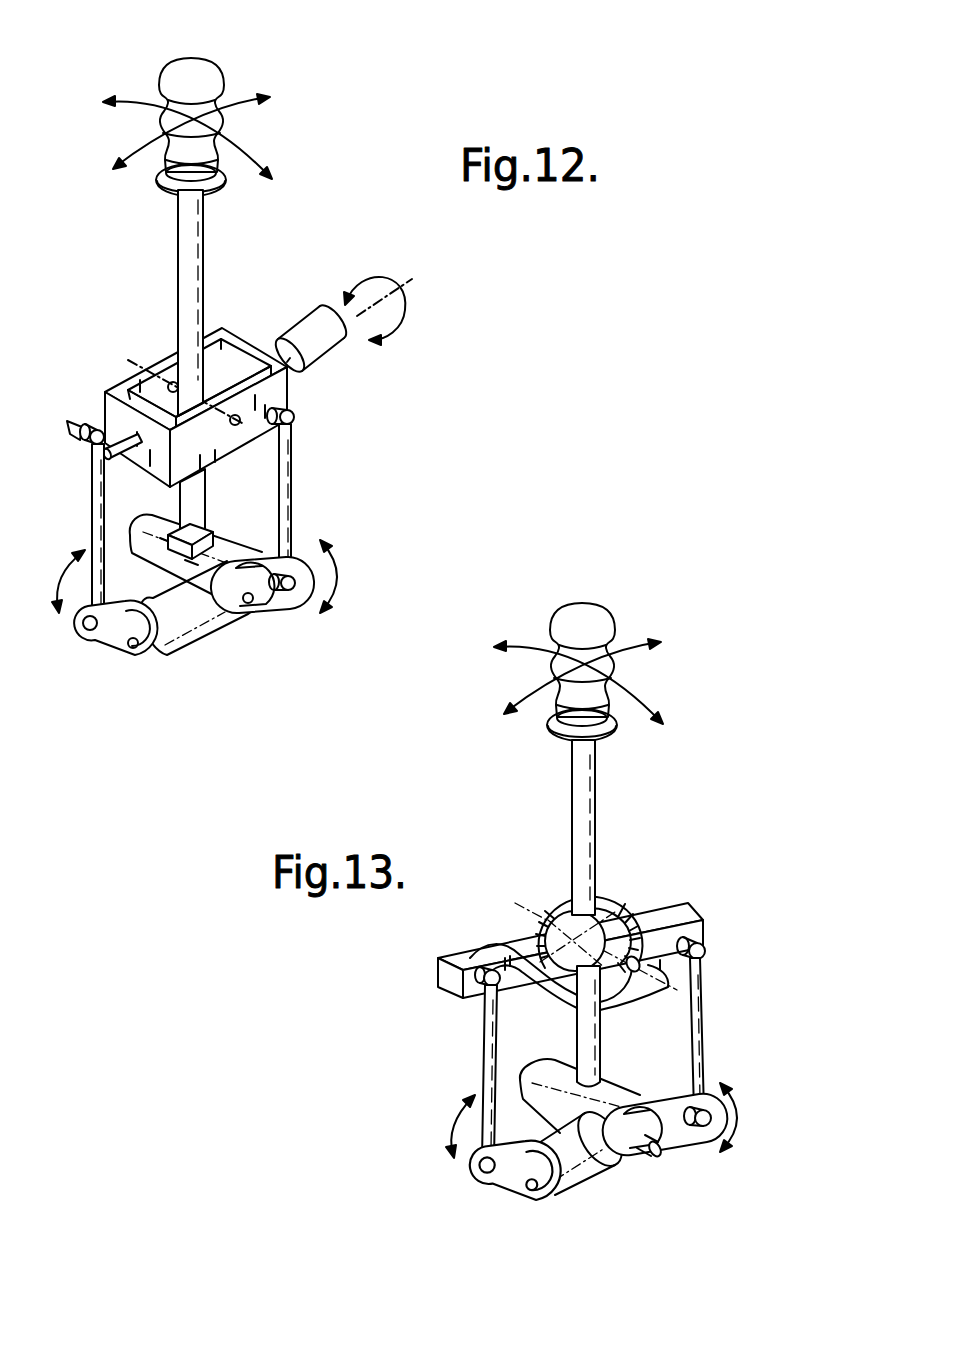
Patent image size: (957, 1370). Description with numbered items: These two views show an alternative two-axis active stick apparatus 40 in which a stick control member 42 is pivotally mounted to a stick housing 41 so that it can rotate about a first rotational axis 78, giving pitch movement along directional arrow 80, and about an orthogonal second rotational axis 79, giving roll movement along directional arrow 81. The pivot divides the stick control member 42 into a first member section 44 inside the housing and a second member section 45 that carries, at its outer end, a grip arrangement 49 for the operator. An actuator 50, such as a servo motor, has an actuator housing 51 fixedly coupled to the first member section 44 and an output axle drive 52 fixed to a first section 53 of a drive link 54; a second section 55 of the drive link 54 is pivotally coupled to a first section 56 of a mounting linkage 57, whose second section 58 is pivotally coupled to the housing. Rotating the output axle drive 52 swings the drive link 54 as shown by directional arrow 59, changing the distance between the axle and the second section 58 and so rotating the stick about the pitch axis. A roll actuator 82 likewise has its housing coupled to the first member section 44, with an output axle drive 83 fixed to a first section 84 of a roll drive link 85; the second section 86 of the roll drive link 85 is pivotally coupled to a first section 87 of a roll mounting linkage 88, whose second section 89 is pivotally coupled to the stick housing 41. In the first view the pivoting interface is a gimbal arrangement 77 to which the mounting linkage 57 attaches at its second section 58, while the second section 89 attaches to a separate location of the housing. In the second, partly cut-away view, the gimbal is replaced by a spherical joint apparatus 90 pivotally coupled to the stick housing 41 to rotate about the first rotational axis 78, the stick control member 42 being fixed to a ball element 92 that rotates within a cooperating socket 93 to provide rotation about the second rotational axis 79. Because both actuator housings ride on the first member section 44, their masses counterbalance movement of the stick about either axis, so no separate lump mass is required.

In FIG. 12, the active stick apparatus 40 is at (343, 193).
In FIG. 13, the stick housing 41 is at (490, 941).
In FIG. 12, the stick control member 42 is at (178, 258).
In FIG. 13, the stick control member 42 is at (571, 803).
In FIG. 12, the first member section 44 is at (215, 480).
In FIG. 13, the first member section 44 is at (601, 1026).
In FIG. 12, the second member section 45 is at (201, 214).
In FIG. 13, the second member section 45 is at (594, 757).
In FIG. 12, the grip arrangement 49 is at (160, 68).
In FIG. 13, the grip arrangement 49 is at (586, 612).
In FIG. 12, the actuator 50 is at (230, 618).
In FIG. 13, the actuator 50 is at (612, 1166).
In FIG. 12, the actuator housing 51 is at (213, 558).
In FIG. 13, the actuator housing 51 is at (608, 1100).
In FIG. 12, the output axle drive 52 is at (253, 605).
In FIG. 13, the output axle drive 52 is at (661, 1152).
In FIG. 12, the first section of drive link 53 is at (250, 624).
In FIG. 13, the first section of drive link 53 is at (650, 1162).
In FIG. 12, the drive link 54 is at (258, 600).
In FIG. 13, the drive link 54 is at (680, 1134).
In FIG. 12, the second section of drive link 55 is at (323, 540).
In FIG. 13, the second section of drive link 55 is at (722, 1084).
In FIG. 12, the first section of mounting linkage 56 is at (323, 612).
In FIG. 13, the first section of mounting linkage 56 is at (722, 1152).
In FIG. 12, the mounting linkage 57 is at (293, 462).
In FIG. 13, the mounting linkage 57 is at (705, 1008).
In FIG. 12, the second section of mounting linkage 58 is at (296, 418).
In FIG. 13, the second section of mounting linkage 58 is at (706, 952).
In FIG. 12, the directional arrow 59 is at (340, 572).
In FIG. 13, the directional arrow 59 is at (745, 1112).
In FIG. 12, the gimbal arrangement 77 is at (284, 388).
In FIG. 12, the first rotational axis 78 is at (272, 437).
In FIG. 13, the first rotational axis 78 is at (656, 974).
In FIG. 12, the second rotational axis 79 is at (404, 283).
In FIG. 13, the second rotational axis 79 is at (650, 907).
In FIG. 12, the directional arrow 80 is at (236, 100).
In FIG. 13, the directional arrow 80 is at (641, 642).
In FIG. 12, the directional arrow 81 is at (238, 148).
In FIG. 13, the directional arrow 81 is at (646, 697).
In FIG. 12, the roll actuator 82 is at (183, 638).
In FIG. 13, the roll actuator 82 is at (577, 1182).
In FIG. 12, the output axle drive 83 is at (134, 649).
In FIG. 13, the output axle drive 83 is at (528, 1192).
In FIG. 12, the first section of roll drive link 84 is at (150, 661).
In FIG. 13, the first section of roll drive link 84 is at (541, 1190).
In FIG. 12, the roll drive link 85 is at (114, 640).
In FIG. 13, the roll drive link 85 is at (508, 1182).
In FIG. 12, the second section of roll drive link 86 is at (80, 598).
In FIG. 13, the second section of roll drive link 86 is at (480, 1146).
In FIG. 12, the pivot axis 87 is at (118, 603).
In FIG. 13, the pivot axis 87 is at (508, 1160).
In FIG. 12, the roll mounting linkage 88 is at (92, 477).
In FIG. 13, the roll mounting linkage 88 is at (487, 1022).
In FIG. 12, the second section of roll mounting linkage 89 is at (92, 425).
In FIG. 13, the second section of roll mounting linkage 89 is at (484, 969).
In FIG. 13, the spherical joint apparatus 90 is at (556, 906).
In FIG. 13, the ball element 92 is at (567, 999).
In FIG. 13, the socket 93 is at (673, 907).